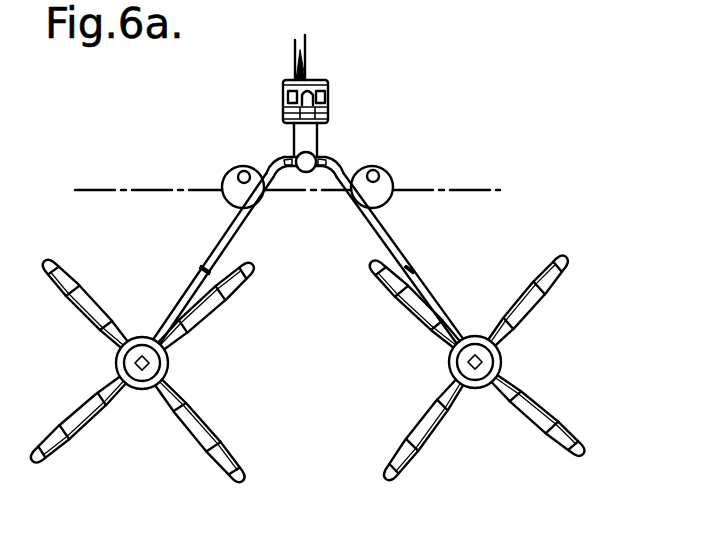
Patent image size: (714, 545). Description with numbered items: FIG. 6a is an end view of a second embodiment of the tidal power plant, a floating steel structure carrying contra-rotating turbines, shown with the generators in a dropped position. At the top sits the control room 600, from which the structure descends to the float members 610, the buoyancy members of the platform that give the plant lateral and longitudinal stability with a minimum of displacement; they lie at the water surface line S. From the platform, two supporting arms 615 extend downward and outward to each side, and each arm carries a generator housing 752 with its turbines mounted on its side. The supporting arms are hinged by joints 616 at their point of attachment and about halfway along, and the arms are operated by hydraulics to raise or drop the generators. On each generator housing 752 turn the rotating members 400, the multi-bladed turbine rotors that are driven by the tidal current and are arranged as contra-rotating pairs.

The control room 600 is at (331, 102).
The float member 610 is at (223, 178).
The supporting arms 615 is at (224, 233).
The joints 616 is at (213, 270).
The generator housing 752 is at (446, 378).
The rotating member 400 is at (547, 401).
The surface line S is at (500, 188).